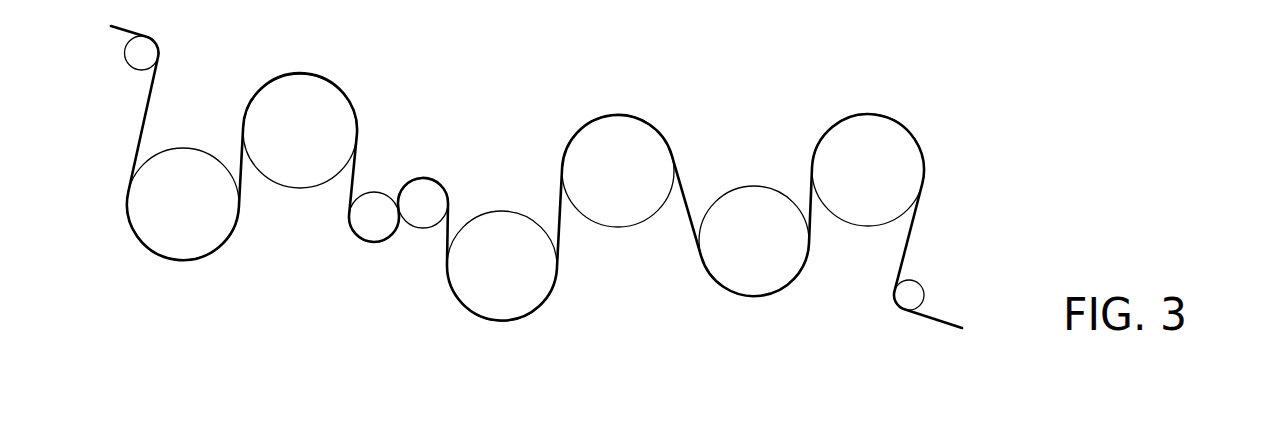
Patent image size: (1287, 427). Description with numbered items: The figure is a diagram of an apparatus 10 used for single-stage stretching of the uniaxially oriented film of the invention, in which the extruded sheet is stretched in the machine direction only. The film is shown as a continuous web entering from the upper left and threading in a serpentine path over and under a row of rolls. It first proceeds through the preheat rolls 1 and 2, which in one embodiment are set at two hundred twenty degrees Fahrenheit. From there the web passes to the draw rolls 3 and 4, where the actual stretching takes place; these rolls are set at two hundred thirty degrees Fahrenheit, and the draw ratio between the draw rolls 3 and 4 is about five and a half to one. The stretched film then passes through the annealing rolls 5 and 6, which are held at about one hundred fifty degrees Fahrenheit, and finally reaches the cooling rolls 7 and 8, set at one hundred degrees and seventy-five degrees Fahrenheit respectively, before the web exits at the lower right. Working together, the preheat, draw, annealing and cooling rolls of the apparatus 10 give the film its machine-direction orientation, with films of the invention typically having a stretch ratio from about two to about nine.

The apparatus 10 is at (303, 47).
The preheat roll 1 is at (193, 258).
The preheat roll 2 is at (299, 195).
The draw roll 3 is at (372, 241).
The draw roll 4 is at (420, 228).
The annealing roll 5 is at (495, 323).
The annealing roll 6 is at (632, 229).
The cooling roll 7 is at (760, 298).
The cooling roll 8 is at (857, 228).